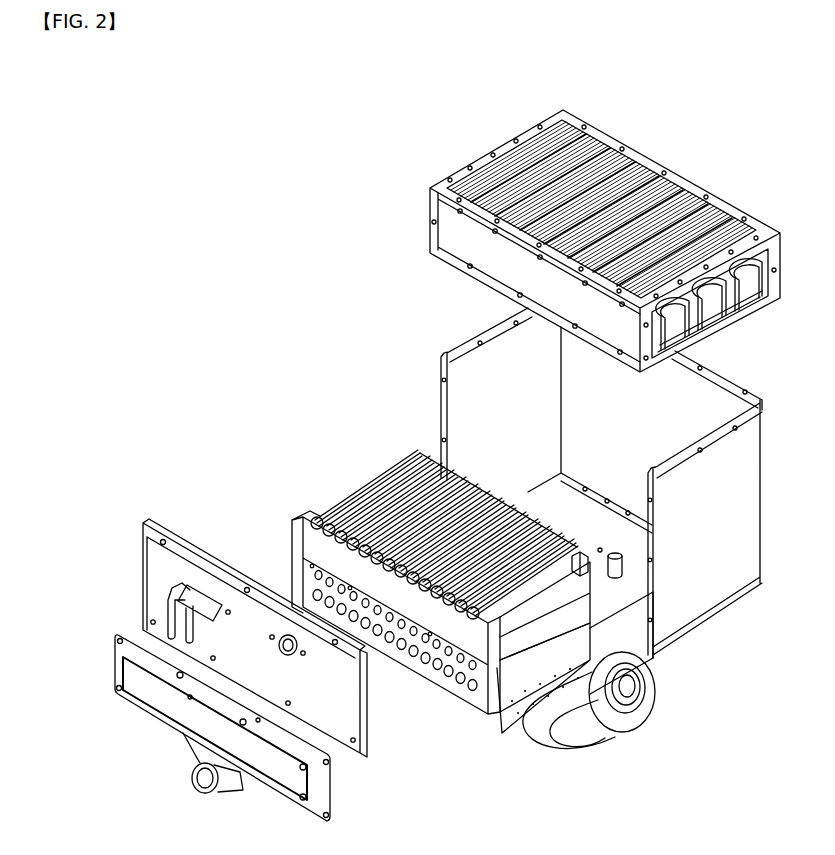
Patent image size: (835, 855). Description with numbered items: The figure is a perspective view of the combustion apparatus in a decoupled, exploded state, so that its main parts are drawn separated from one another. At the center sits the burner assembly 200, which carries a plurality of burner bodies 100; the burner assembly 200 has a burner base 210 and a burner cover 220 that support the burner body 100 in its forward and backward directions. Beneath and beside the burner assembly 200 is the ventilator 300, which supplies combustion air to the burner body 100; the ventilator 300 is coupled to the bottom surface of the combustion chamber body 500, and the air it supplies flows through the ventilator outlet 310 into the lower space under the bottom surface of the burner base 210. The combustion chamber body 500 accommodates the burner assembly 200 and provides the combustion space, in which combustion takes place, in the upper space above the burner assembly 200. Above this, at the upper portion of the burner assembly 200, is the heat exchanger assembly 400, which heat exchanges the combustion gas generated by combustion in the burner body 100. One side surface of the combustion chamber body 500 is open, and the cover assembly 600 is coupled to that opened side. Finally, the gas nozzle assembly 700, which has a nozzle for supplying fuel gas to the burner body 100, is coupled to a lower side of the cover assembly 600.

The burner body 100 is at (363, 487).
The burner assembly 200 is at (402, 617).
The burner base 210 is at (493, 716).
The burner cover 220 is at (548, 648).
The ventilator 300 is at (619, 750).
The ventilator outlet 310 is at (632, 558).
The heat exchanger assembly 400 is at (479, 134).
The combustion chamber body 500 is at (442, 358).
The cover assembly 600 is at (137, 533).
The gas nozzle assembly 700 is at (117, 697).